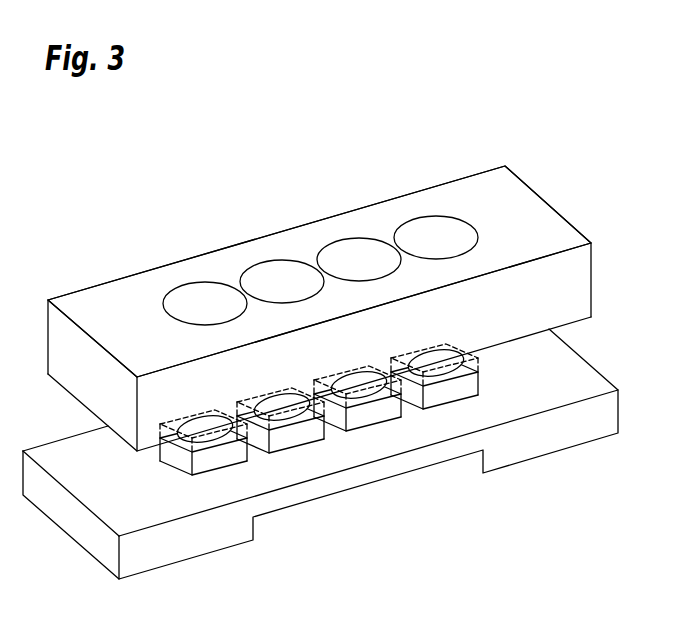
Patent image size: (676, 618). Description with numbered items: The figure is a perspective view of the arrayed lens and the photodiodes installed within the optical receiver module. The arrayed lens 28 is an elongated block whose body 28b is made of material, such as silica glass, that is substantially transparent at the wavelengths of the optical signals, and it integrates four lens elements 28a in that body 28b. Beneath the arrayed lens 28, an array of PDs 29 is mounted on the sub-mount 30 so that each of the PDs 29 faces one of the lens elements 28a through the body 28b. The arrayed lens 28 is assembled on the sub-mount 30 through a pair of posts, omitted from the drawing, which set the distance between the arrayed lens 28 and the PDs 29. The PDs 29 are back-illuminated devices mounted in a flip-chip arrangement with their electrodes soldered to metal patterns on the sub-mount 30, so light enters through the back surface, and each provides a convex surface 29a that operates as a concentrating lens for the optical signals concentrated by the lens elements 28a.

The arrayed lens 28 is at (541, 190).
The lens elements 28a is at (197, 293).
The body 28b is at (127, 293).
The PDs 29 is at (307, 436).
The convex surfaces 29a is at (288, 418).
The sub-mount 30 is at (510, 452).